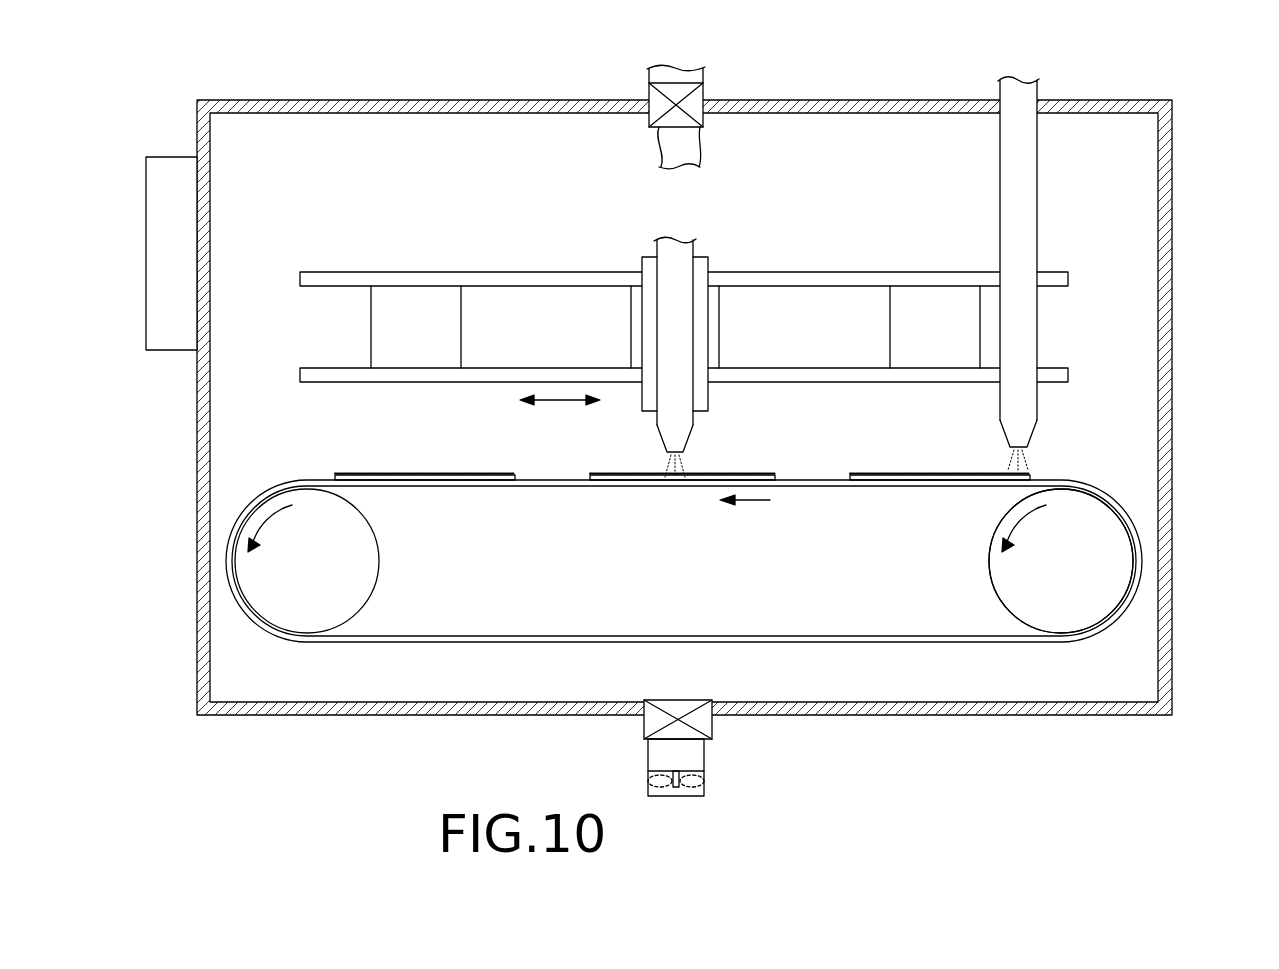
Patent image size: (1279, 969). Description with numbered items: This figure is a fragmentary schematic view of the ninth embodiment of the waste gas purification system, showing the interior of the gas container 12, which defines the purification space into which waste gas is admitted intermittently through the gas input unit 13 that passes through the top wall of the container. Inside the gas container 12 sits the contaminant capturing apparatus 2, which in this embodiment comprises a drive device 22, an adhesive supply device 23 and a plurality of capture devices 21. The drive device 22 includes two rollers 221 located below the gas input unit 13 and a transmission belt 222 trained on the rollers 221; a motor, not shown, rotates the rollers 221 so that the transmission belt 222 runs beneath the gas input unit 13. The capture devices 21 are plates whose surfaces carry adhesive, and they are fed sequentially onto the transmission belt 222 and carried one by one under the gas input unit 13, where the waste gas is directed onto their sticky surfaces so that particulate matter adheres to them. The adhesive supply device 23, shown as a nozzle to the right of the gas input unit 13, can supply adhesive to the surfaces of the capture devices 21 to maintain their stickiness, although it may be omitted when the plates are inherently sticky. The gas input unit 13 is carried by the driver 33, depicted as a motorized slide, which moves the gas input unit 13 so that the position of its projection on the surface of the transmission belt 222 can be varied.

The contaminant capturing apparatus 2 is at (738, 413).
The gas container 12 is at (1172, 150).
The gas input unit 13 is at (683, 320).
The capture device 21 is at (738, 478).
The drive device 22 is at (1135, 598).
The adhesive supply device 23 is at (1022, 168).
The driver 33 is at (560, 278).
The roller 221 is at (285, 613).
The transmission belt 222 is at (1120, 518).